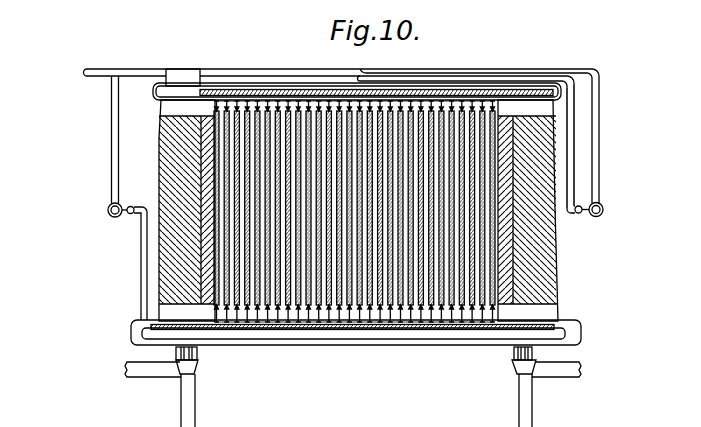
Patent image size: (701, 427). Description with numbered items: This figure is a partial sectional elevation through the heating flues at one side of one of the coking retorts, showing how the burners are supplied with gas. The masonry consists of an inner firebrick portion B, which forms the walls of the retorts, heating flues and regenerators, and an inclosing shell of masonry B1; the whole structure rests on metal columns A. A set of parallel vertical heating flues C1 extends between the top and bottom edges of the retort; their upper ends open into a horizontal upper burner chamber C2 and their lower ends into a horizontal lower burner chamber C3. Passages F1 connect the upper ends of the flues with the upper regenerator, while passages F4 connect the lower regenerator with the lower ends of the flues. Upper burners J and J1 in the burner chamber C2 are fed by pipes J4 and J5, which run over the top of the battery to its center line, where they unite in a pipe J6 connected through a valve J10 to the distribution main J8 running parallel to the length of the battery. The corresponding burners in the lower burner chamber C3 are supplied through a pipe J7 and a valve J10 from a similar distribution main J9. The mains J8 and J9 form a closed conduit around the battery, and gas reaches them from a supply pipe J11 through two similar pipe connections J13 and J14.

The metal column A is at (180, 402).
The inner firebrick portion B is at (498, 242).
The inclosing shell of masonry B1 is at (531, 272).
The heating flues C1 is at (410, 283).
The upper burner chamber C2 is at (202, 102).
The lower burner chamber C3 is at (200, 302).
The passages F1 is at (417, 100).
The passages F4 is at (250, 300).
The upper burner J is at (450, 95).
The burner J1 is at (280, 375).
The pipe J4 is at (498, 73).
The pipe J5 is at (303, 350).
The pipe J6 is at (566, 113).
The pipe J7 is at (133, 255).
The distribution main J8 is at (596, 205).
The distribution main J9 is at (100, 203).
The valve J10 is at (572, 197).
The supply pipe J11 is at (78, 64).
The pipe connection J13 is at (593, 157).
The pipe connection J14 is at (80, 138).